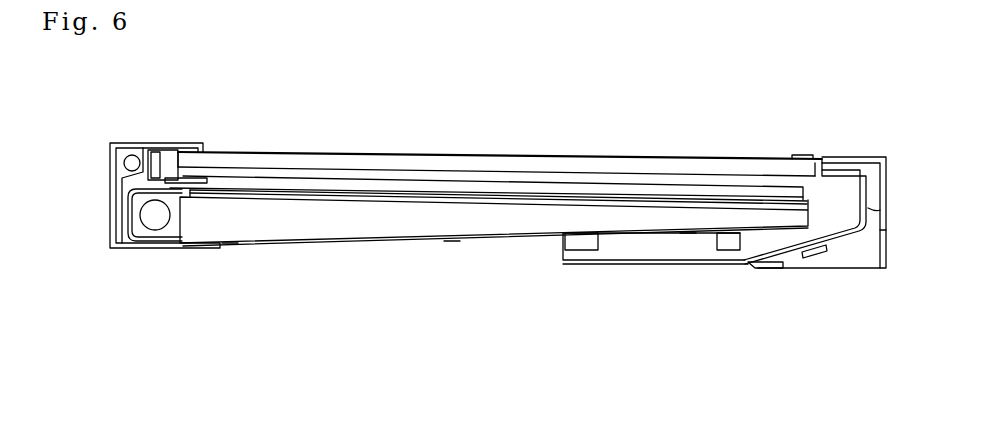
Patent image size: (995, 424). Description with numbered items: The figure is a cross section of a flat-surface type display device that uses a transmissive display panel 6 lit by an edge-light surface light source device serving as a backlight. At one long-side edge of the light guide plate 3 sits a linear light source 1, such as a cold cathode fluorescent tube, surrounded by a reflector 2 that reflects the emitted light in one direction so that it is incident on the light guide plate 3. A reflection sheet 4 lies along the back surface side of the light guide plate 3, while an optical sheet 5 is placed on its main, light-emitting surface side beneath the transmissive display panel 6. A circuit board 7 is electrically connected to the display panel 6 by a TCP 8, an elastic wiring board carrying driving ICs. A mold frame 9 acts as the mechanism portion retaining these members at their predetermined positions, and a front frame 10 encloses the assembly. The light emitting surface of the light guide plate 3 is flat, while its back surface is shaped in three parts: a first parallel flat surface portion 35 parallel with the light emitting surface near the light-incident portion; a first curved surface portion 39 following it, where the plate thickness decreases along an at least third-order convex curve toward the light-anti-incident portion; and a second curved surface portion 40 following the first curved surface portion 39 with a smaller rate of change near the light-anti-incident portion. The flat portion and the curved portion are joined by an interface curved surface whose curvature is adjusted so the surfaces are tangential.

The linear light source 1 is at (160, 212).
The reflector 2 is at (164, 252).
The light guide plate 3 is at (309, 224).
The reflection sheet 4 is at (403, 242).
The optical sheet 5 is at (258, 196).
The transmissive display panel 6 is at (360, 164).
The circuit board 7 is at (645, 262).
The TCP 8 is at (786, 258).
The mold frame 9 is at (732, 240).
The front frame 10 is at (122, 141).
The first parallel flat surface portion 35 is at (230, 243).
The first curved surface portion 39 is at (452, 241).
The second curved surface portion 40 is at (687, 233).